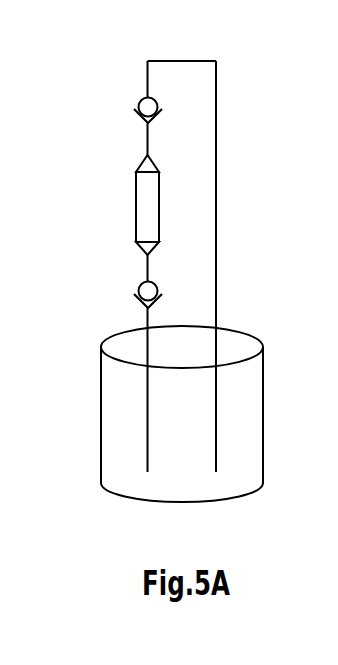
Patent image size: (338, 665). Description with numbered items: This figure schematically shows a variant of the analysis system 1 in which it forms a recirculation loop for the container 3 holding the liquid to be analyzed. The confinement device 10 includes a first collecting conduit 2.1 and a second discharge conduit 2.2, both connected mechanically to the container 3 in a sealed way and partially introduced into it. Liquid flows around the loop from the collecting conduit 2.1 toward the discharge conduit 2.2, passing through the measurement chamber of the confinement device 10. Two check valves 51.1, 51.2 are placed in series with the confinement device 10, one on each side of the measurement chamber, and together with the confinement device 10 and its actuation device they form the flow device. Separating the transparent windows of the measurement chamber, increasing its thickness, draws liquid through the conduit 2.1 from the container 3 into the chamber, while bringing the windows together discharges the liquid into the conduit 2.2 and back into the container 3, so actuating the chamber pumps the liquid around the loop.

The analysis system 1 is at (100, 60).
The collecting conduit 2.1 is at (146, 380).
The discharge conduit 2.2 is at (218, 127).
The container 3 is at (100, 415).
The confinement device 10 is at (135, 207).
The check valve 51.1 is at (138, 290).
The check valve 51.2 is at (138, 104).